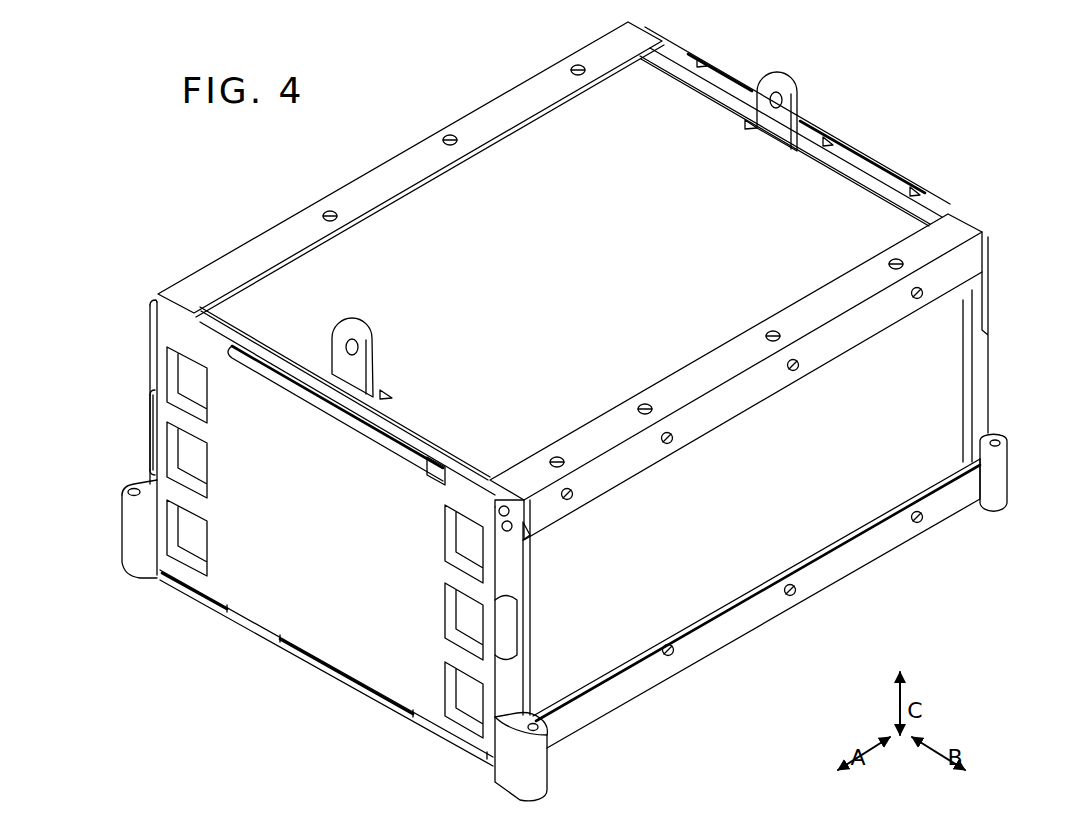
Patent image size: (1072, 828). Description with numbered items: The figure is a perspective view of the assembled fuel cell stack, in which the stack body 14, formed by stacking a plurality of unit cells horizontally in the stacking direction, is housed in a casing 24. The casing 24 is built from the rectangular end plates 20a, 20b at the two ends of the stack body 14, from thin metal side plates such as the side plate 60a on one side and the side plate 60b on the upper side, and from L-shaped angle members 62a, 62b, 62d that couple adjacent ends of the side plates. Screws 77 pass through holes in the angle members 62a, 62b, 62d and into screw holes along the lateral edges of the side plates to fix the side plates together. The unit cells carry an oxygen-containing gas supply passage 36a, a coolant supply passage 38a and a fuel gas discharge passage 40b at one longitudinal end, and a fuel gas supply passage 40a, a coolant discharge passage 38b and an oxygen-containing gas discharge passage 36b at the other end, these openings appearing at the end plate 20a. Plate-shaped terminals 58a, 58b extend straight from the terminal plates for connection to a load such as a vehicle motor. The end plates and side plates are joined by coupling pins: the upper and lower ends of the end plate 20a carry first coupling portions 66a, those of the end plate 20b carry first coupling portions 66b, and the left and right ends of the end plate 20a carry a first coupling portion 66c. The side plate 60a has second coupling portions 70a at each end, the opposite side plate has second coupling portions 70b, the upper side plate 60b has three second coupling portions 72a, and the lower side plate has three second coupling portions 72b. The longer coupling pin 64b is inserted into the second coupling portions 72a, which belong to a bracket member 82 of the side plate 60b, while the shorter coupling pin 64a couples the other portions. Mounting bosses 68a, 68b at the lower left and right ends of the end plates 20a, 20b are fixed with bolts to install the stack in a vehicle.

The stack body 14 is at (572, 262).
The end plate 20a is at (362, 642).
The end plate 20b is at (907, 170).
The casing 24 is at (378, 172).
The oxygen-containing gas supply passage 36a is at (180, 392).
The oxygen-containing gas discharge passage 36b is at (465, 690).
The coolant supply passage 38a is at (180, 455).
The coolant discharge passage 38b is at (465, 612).
The fuel gas supply passage 40a is at (470, 540).
The fuel gas discharge passage 40b is at (180, 530).
The terminal 58a is at (332, 330).
The terminal 58b is at (770, 72).
The side plate 60a is at (975, 380).
The side plate 60b is at (442, 250).
The angle member 62a is at (735, 408).
The angle member 62b is at (500, 102).
The angle member 62d is at (855, 555).
The coupling pin 64a is at (535, 536).
The coupling pin 64b is at (503, 505).
The first coupling portion 66a is at (260, 370).
The first coupling portion 66b is at (732, 85).
The first coupling portion 66c is at (157, 428).
The mounting boss 68a is at (128, 545).
The mounting boss 68b is at (1008, 485).
The second coupling portion 70a is at (525, 577).
The second coupling portion 70b is at (157, 358).
The second coupling portion 72a is at (683, 47).
The second coupling portion 72b is at (210, 598).
The screw 77 is at (450, 133).
The bracket member 82 is at (862, 170).